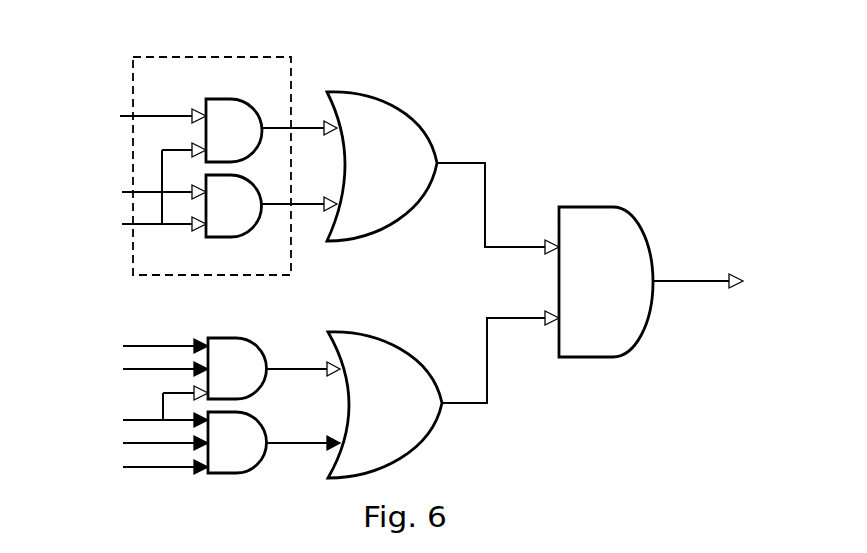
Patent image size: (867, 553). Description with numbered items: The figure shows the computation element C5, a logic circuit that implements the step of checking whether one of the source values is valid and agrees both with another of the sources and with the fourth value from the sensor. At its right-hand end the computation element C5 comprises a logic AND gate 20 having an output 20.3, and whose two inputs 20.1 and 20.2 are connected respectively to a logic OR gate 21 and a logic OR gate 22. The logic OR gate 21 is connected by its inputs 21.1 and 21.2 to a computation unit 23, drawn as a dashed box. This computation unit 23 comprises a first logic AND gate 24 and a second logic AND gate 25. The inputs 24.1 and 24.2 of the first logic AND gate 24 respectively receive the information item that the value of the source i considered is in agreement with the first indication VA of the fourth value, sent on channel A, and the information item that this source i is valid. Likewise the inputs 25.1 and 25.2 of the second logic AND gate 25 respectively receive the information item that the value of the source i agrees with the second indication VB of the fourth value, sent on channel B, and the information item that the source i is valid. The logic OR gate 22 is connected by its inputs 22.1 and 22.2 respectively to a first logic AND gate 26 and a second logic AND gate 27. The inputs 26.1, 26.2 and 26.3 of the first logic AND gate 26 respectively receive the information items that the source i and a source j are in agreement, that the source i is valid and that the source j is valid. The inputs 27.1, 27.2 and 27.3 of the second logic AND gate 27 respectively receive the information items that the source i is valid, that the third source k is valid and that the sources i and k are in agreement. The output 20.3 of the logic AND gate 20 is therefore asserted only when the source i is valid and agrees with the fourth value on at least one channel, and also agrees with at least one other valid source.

The logic AND gate 20 is at (645, 327).
The input of logic AND gate 20 20.1 is at (517, 247).
The input of logic AND gate 20 20.2 is at (517, 318).
The output of logic AND gate 20 20.3 is at (685, 281).
The logic OR gate 21 is at (392, 225).
The input of logic OR gate 21 21.1 is at (310, 127).
The input of logic OR gate 21 21.2 is at (310, 205).
The logic OR gate 22 is at (425, 440).
The input of logic OR gate 22 22.1 is at (294, 367).
The input of logic OR gate 22 22.2 is at (294, 445).
The computation unit 23 is at (207, 282).
The first logic AND gate 24 is at (235, 99).
The input of first logic AND gate 24 24.1 is at (155, 116).
The input of first logic AND gate 24 24.2 is at (160, 156).
The second logic AND gate 25 is at (236, 237).
The input of second logic AND gate 25 25.1 is at (145, 193).
The input of second logic AND gate 25 25.2 is at (145, 226).
The first logic AND gate 26 is at (265, 380).
The input of first logic AND gate 26 26.1 is at (157, 345).
The input of first logic AND gate 26 26.2 is at (157, 369).
The input of first logic AND gate 26 26.3 is at (160, 405).
The second logic AND gate 27 is at (252, 473).
The input of second logic AND gate 27 27.1 is at (155, 420).
The input of second logic AND gate 27 27.2 is at (155, 443).
The input of second logic AND gate 27 27.3 is at (155, 467).
The computation element C5 is at (640, 425).